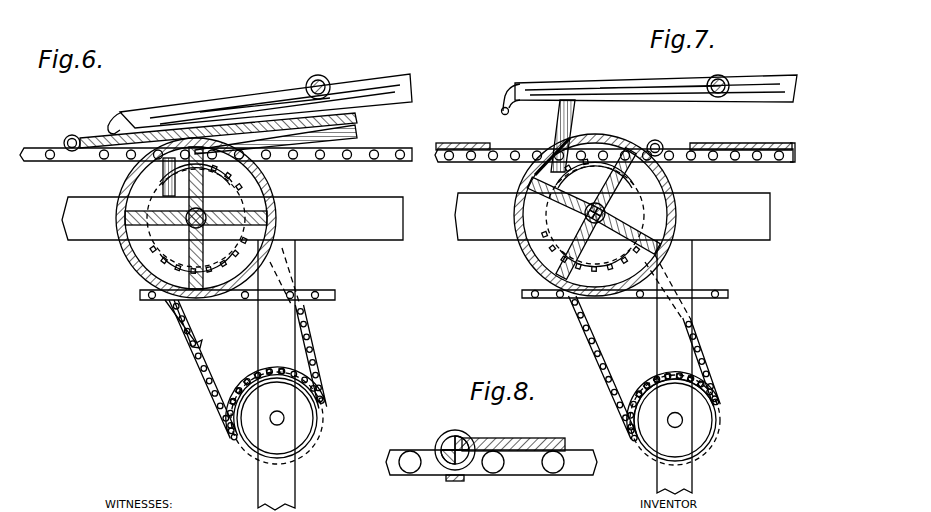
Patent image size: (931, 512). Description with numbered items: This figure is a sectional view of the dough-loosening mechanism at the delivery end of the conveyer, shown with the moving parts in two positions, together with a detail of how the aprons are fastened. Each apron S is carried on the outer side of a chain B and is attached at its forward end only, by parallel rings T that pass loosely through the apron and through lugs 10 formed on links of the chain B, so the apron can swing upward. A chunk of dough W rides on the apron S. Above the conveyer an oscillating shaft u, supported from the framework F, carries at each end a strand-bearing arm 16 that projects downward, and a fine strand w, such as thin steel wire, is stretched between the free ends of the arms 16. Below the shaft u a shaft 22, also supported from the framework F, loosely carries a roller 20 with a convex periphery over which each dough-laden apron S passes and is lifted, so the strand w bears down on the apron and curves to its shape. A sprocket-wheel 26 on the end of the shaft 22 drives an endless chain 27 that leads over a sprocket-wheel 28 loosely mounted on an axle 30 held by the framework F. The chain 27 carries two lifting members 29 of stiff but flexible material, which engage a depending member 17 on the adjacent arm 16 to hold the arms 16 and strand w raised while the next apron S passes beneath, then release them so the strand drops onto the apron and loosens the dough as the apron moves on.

In FIG. 6, the strand-bearing arm 16 is at (266, 98).
In FIG. 7, the strand-bearing arm 16 is at (656, 79).
In FIG. 6, the depending member 17 is at (162, 171).
In FIG. 7, the depending member 17 is at (556, 128).
In FIG. 6, the roller 20 is at (135, 267).
In FIG. 7, the roller 20 is at (530, 250).
In FIG. 6, the shaft 22 is at (192, 223).
In FIG. 7, the shaft 22 is at (608, 213).
In FIG. 6, the sprocket-wheel 26 is at (197, 222).
In FIG. 7, the sprocket-wheel 26 is at (593, 220).
In FIG. 6, the endless chain 27 is at (198, 386).
In FIG. 7, the endless chain 27 is at (588, 332).
In FIG. 6, the sprocket-wheel 28 is at (249, 387).
In FIG. 7, the sprocket-wheel 28 is at (652, 378).
In FIG. 6, the lifting member 29 is at (178, 322).
In FIG. 7, the lifting member 29 is at (578, 150).
In FIG. 6, the axle 30 is at (277, 426).
In FIG. 7, the axle 30 is at (675, 412).
In FIG. 8, the lug 10 is at (456, 480).
In FIG. 6, the chain B is at (356, 164).
In FIG. 7, the chain B is at (466, 168).
In FIG. 8, the chain B is at (520, 470).
In FIG. 6, the framework F is at (290, 250).
In FIG. 7, the framework F is at (690, 248).
In FIG. 6, the apron S is at (433, 148).
In FIG. 7, the apron S is at (793, 148).
In FIG. 8, the apron S is at (562, 440).
In FIG. 6, the ring T is at (62, 141).
In FIG. 7, the ring T is at (656, 140).
In FIG. 8, the ring T is at (448, 436).
In FIG. 6, the chunk of dough W is at (257, 112).
In FIG. 7, the chunk of dough W is at (717, 142).
In FIG. 6, the oscillating shaft u is at (322, 76).
In FIG. 7, the oscillating shaft u is at (727, 78).
In FIG. 6, the strand w is at (113, 118).
In FIG. 7, the strand w is at (505, 95).